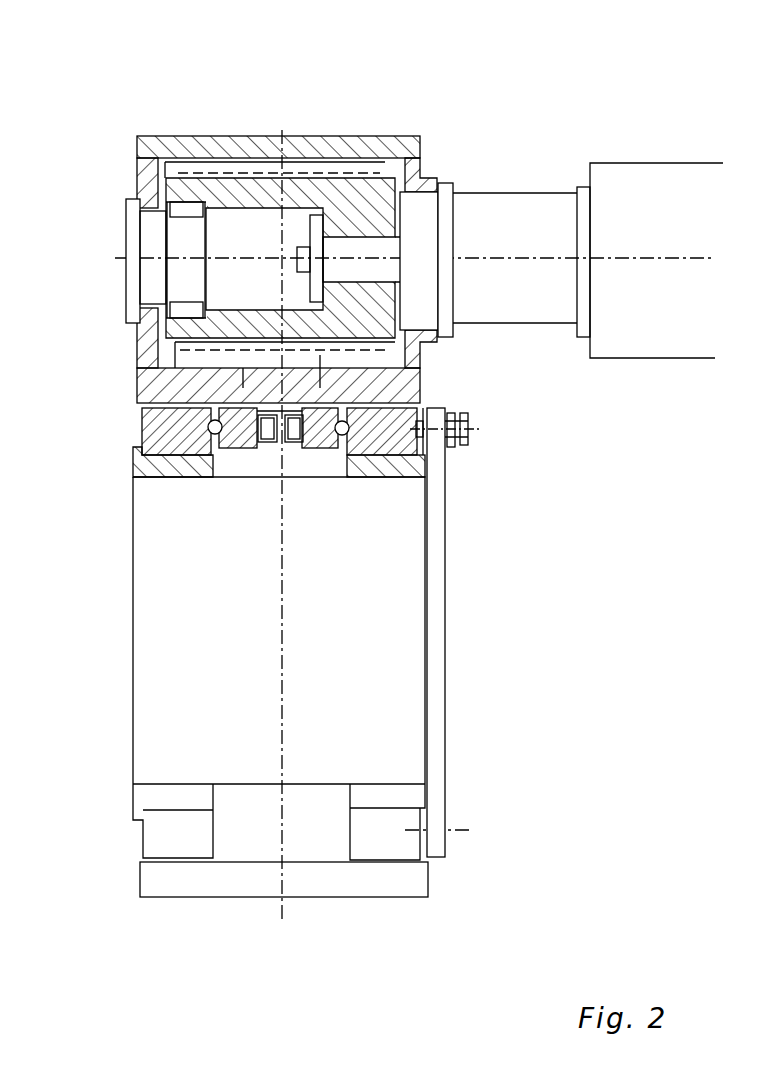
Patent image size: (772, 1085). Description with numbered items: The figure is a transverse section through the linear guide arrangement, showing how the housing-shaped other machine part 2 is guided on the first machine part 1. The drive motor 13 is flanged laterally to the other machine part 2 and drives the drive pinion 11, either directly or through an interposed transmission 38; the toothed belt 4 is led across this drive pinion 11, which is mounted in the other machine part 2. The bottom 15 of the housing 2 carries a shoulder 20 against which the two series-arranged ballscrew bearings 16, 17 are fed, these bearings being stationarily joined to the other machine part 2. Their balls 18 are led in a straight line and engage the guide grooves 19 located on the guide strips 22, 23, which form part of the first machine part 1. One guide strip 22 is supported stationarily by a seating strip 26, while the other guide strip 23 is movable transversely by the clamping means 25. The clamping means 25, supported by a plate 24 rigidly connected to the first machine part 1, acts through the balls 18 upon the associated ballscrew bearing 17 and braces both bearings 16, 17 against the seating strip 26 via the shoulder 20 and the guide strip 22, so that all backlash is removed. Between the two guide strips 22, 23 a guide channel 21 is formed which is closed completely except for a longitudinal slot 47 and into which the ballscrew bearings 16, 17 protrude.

The first machine part 1 is at (180, 655).
The other machine part 2 is at (358, 142).
The toothed belt 4 is at (267, 165).
The drive pinion 11 is at (202, 190).
The drive motor 13 is at (627, 195).
The bottom 15 is at (297, 405).
The ballscrew bearing 16 is at (226, 445).
The ballscrew bearing 17 is at (307, 447).
The balls 18 is at (142, 420).
The guide grooves 19 is at (185, 468).
The shoulder 20 is at (420, 397).
The guide channel 21 is at (273, 465).
The guide strip 22 is at (142, 436).
The guide strip 23 is at (395, 478).
The plate 24 is at (438, 505).
The clamping means 25 is at (465, 440).
The seating strip 26 is at (147, 467).
The transmission 38 is at (492, 215).
The longitudinal slot 47 is at (268, 410).